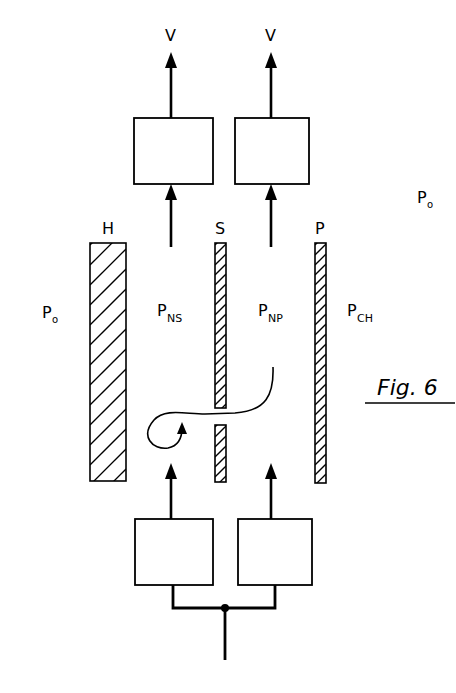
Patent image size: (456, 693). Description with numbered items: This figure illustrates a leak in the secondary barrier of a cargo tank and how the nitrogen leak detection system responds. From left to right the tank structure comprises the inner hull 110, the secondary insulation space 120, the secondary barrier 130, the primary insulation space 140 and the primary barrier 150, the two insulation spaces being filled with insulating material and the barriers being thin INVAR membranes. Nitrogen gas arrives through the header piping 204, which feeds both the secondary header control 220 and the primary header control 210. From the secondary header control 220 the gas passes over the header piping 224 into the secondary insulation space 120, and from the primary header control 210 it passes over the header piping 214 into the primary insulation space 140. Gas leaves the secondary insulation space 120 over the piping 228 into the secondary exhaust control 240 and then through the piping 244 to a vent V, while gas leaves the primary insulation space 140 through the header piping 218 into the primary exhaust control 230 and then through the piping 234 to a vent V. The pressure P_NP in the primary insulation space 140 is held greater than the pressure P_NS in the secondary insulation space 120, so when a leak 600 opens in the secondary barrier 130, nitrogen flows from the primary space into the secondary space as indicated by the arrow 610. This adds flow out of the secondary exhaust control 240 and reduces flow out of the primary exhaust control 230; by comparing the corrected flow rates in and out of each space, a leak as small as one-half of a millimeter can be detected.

The inner hull 110 is at (90, 268).
The secondary insulation space 120 is at (185, 358).
The secondary barrier 130 is at (215, 282).
The primary insulation space 140 is at (277, 355).
The primary barrier 150 is at (326, 283).
The header piping 204 is at (225, 643).
The primary header control 210 is at (312, 560).
The header piping 214 is at (271, 500).
The header piping 218 is at (271, 213).
The secondary header control 220 is at (135, 552).
The header piping 224 is at (171, 498).
The piping 228 is at (171, 213).
The primary exhaust control 230 is at (309, 148).
The piping 234 is at (271, 101).
The secondary exhaust control 240 is at (134, 145).
The piping 244 is at (171, 89).
The leak 600 is at (214, 408).
The arrow 610 is at (249, 415).